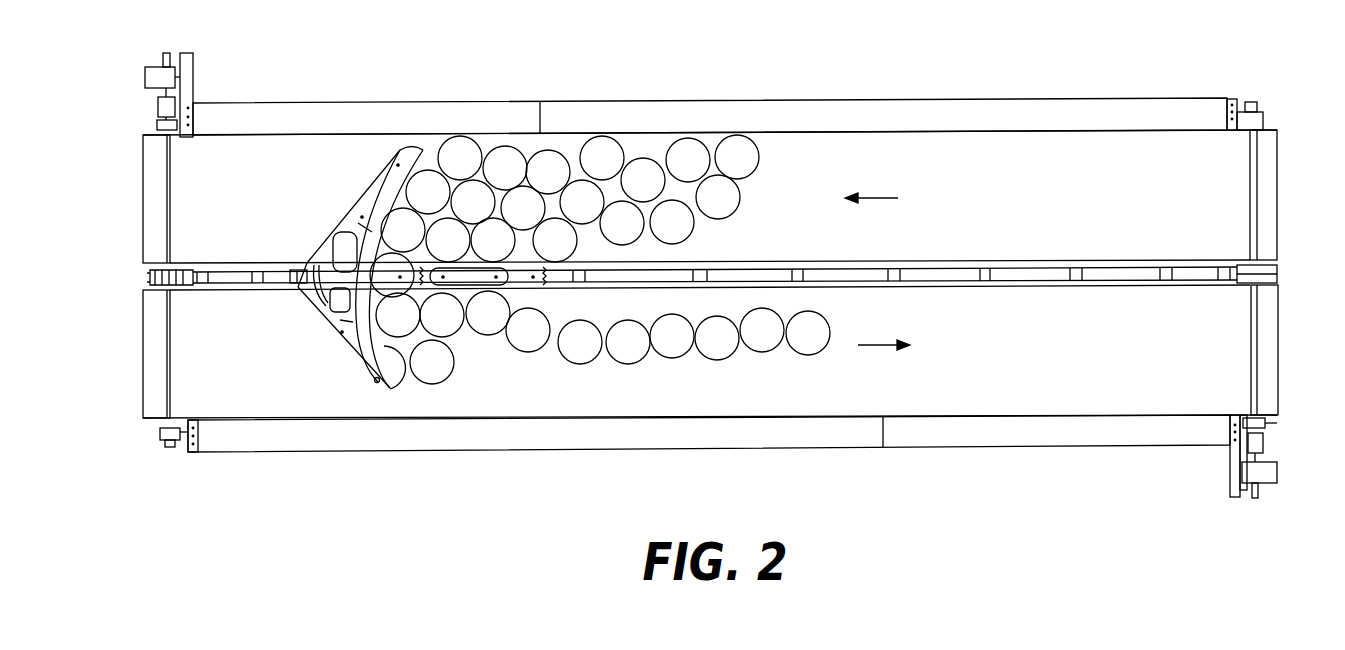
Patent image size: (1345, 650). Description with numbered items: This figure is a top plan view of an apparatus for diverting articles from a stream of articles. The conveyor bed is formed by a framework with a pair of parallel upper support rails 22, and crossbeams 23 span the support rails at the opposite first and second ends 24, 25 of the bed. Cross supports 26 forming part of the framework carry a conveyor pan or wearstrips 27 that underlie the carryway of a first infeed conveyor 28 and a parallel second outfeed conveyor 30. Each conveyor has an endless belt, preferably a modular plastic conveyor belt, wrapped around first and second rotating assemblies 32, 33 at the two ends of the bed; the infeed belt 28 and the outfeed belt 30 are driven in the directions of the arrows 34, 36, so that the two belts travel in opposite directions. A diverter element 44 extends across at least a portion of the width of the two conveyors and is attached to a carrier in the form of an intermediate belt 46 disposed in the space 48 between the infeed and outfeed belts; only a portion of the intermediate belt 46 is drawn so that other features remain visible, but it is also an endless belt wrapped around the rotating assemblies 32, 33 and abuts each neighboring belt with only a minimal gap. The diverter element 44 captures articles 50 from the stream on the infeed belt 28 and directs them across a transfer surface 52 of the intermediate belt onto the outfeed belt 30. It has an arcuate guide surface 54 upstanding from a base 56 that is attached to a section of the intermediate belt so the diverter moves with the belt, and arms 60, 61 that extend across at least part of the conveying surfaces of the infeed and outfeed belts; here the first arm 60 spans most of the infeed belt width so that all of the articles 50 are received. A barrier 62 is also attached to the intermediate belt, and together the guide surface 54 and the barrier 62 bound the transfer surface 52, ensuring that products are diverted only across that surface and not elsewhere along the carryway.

The upper support rails 22 is at (967, 118).
The crossbeams 23 is at (193, 68).
The first end of the conveyor bed 24 is at (1280, 193).
The second end of the conveyor bed 25 is at (143, 168).
The cross supports 26 is at (1172, 283).
The wearstrips 27 is at (1047, 283).
The infeed conveyor 28 is at (1122, 140).
The outfeed conveyor 30 is at (1012, 405).
The first rotating assemblies 32 is at (1270, 418).
The second rotating assemblies 33 is at (160, 428).
The arrow 34 is at (880, 198).
The arrow 36 is at (880, 345).
The diverter element 44 is at (327, 253).
The intermediate belt 46 is at (525, 285).
The space 48 is at (1127, 283).
The articles 50 is at (715, 347).
The transfer surface 52 is at (377, 340).
The guide surface 54 is at (390, 377).
The base 56 is at (305, 297).
The first arm 60 is at (423, 157).
The second arm 61 is at (375, 388).
The barrier 62 is at (468, 285).